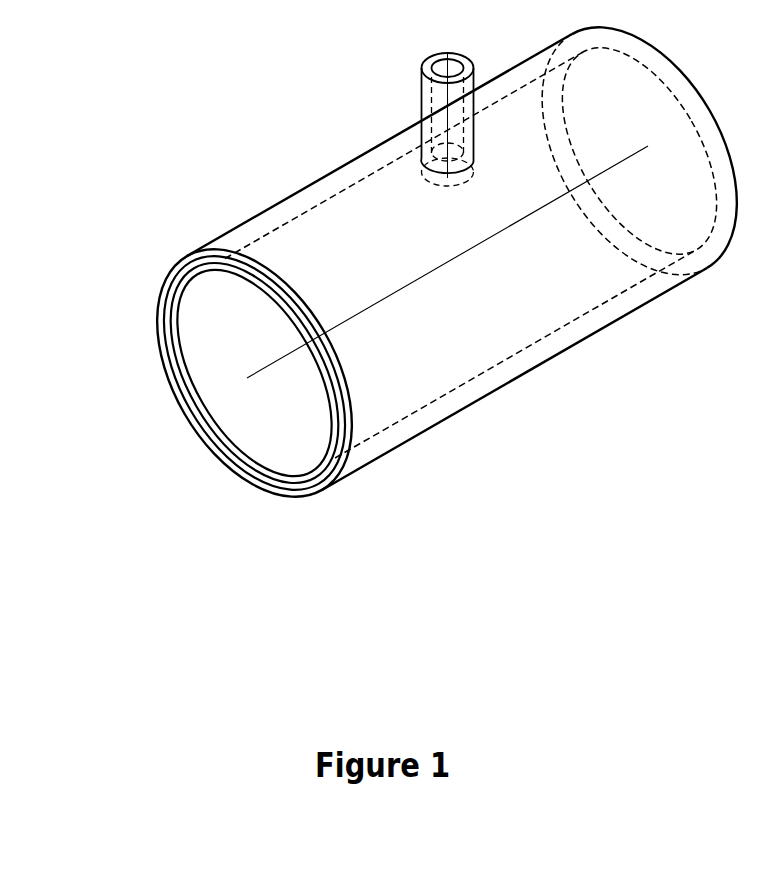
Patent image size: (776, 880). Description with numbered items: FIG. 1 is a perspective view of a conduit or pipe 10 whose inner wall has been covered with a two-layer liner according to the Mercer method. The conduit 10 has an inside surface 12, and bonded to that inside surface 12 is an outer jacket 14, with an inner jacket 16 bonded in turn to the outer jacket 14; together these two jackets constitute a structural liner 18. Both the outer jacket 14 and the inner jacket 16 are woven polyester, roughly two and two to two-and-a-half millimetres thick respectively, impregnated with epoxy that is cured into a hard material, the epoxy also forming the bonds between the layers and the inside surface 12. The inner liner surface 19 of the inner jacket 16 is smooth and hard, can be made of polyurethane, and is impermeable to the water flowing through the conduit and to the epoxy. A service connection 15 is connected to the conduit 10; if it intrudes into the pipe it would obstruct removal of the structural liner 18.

The conduit 10 is at (165, 163).
The inside surface 12 is at (233, 468).
The outer jacket 14 is at (316, 487).
The service connection 15 is at (420, 92).
The inner jacket 16 is at (322, 472).
The structural liner 18 is at (366, 402).
The inner liner surface 19 is at (447, 278).